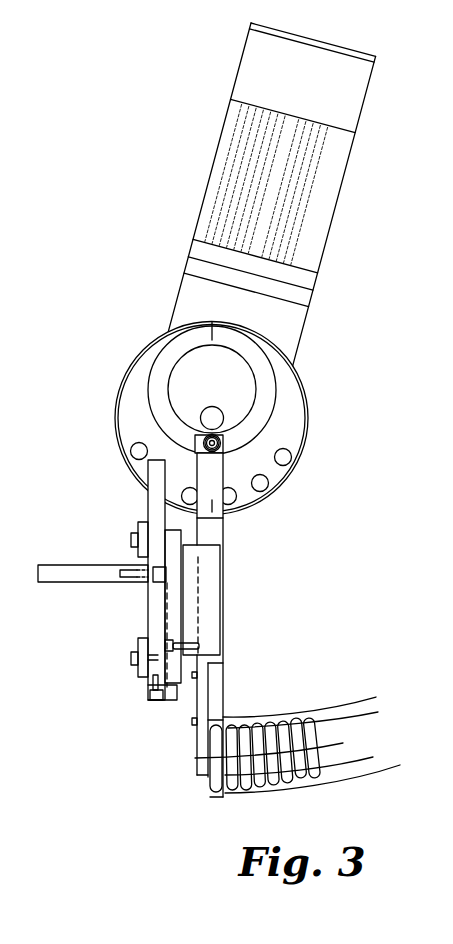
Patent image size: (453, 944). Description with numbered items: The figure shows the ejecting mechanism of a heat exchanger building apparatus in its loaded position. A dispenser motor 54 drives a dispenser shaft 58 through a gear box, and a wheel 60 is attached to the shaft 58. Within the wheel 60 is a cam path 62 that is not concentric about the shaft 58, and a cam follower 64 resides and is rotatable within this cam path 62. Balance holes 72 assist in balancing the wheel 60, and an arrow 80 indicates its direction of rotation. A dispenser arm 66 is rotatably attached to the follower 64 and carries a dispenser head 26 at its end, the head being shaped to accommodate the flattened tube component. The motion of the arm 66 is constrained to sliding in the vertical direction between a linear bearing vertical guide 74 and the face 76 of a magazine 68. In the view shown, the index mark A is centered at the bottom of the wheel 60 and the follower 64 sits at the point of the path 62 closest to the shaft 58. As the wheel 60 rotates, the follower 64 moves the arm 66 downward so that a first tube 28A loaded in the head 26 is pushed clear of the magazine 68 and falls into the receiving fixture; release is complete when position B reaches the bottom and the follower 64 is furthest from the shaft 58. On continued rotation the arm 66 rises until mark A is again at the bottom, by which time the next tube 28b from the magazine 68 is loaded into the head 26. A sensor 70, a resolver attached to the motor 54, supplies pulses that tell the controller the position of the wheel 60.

The dispenser head 26 is at (222, 702).
The first tube 28A is at (210, 787).
The tube 28b is at (233, 724).
The dispenser motor 54 is at (215, 177).
The dispenser shaft 58 is at (223, 413).
The wheel 60 is at (132, 399).
The cam path 62 is at (267, 390).
The cam follower 64 is at (224, 446).
The dispenser arm 66 is at (226, 662).
The magazine 68 is at (373, 697).
The sensor 70 is at (253, 59).
The balance holes 72 is at (284, 466).
The linear bearing vertical guide 74 is at (190, 597).
The face 76 is at (221, 795).
The arrow 80 is at (197, 481).
The index mark A is at (212, 490).
The position B is at (211, 345).